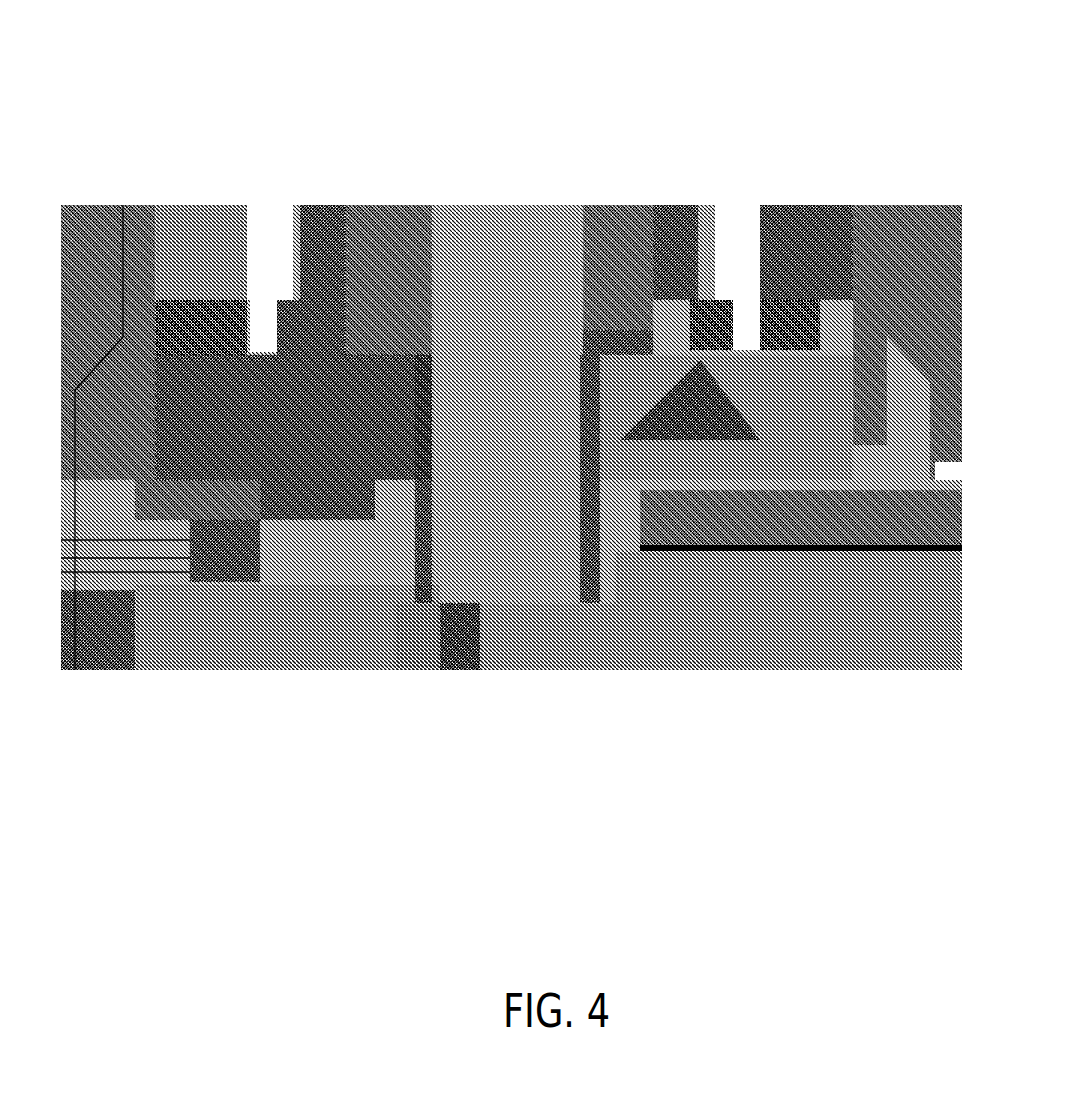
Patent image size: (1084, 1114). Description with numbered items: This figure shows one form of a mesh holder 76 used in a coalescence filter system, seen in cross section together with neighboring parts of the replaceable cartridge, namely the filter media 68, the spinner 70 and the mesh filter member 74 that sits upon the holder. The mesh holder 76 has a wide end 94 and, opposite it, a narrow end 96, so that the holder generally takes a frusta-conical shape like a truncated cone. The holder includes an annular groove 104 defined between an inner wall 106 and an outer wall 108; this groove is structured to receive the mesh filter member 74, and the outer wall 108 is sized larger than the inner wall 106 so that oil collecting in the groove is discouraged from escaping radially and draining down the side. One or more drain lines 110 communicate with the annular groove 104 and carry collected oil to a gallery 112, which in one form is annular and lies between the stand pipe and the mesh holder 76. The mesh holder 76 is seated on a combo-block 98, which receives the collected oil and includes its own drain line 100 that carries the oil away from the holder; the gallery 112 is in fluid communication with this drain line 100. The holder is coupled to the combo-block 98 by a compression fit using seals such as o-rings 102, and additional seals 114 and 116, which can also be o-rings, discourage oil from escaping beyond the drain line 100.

The filter media 68 is at (270, 245).
The spinner 70 is at (183, 205).
The mesh filter member 74 is at (302, 210).
The mesh holder 76 is at (600, 325).
The wide end 94 is at (362, 233).
The narrow end 96 is at (362, 695).
The combo-block 98 is at (635, 650).
The drain line 100 is at (375, 520).
The o-rings 102 is at (280, 565).
The annular groove 104 is at (650, 363).
The inner wall 106 is at (690, 400).
The outer wall 108 is at (723, 367).
The drain line 110 is at (390, 377).
The gallery 112 is at (575, 470).
The seal 114 is at (430, 565).
The seal 116 is at (580, 615).